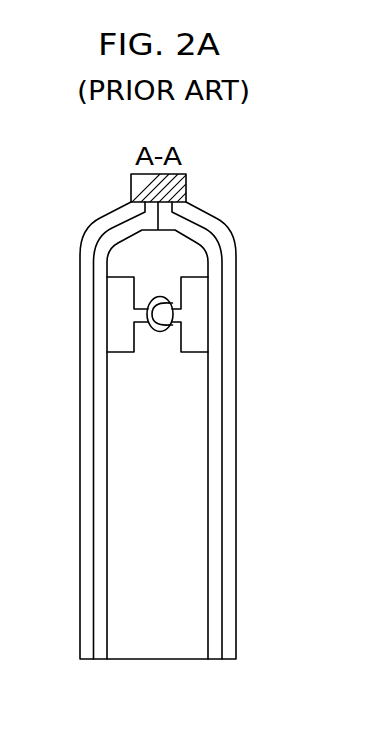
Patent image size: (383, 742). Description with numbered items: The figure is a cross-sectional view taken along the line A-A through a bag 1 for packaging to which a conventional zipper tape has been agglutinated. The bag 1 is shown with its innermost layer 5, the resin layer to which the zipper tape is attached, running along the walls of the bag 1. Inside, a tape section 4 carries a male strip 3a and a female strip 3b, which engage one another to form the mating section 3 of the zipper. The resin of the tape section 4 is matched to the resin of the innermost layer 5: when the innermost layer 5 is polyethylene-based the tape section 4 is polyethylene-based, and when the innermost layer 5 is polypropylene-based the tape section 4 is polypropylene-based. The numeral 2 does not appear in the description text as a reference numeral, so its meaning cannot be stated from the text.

The bag for packaging 1 is at (122, 573).
The groove 2 is at (153, 360).
The mating section 3 is at (157, 300).
The male strip 3a is at (148, 303).
The female strip 3b is at (167, 298).
The tape section 4 is at (120, 338).
The innermost layer 5 is at (98, 493).